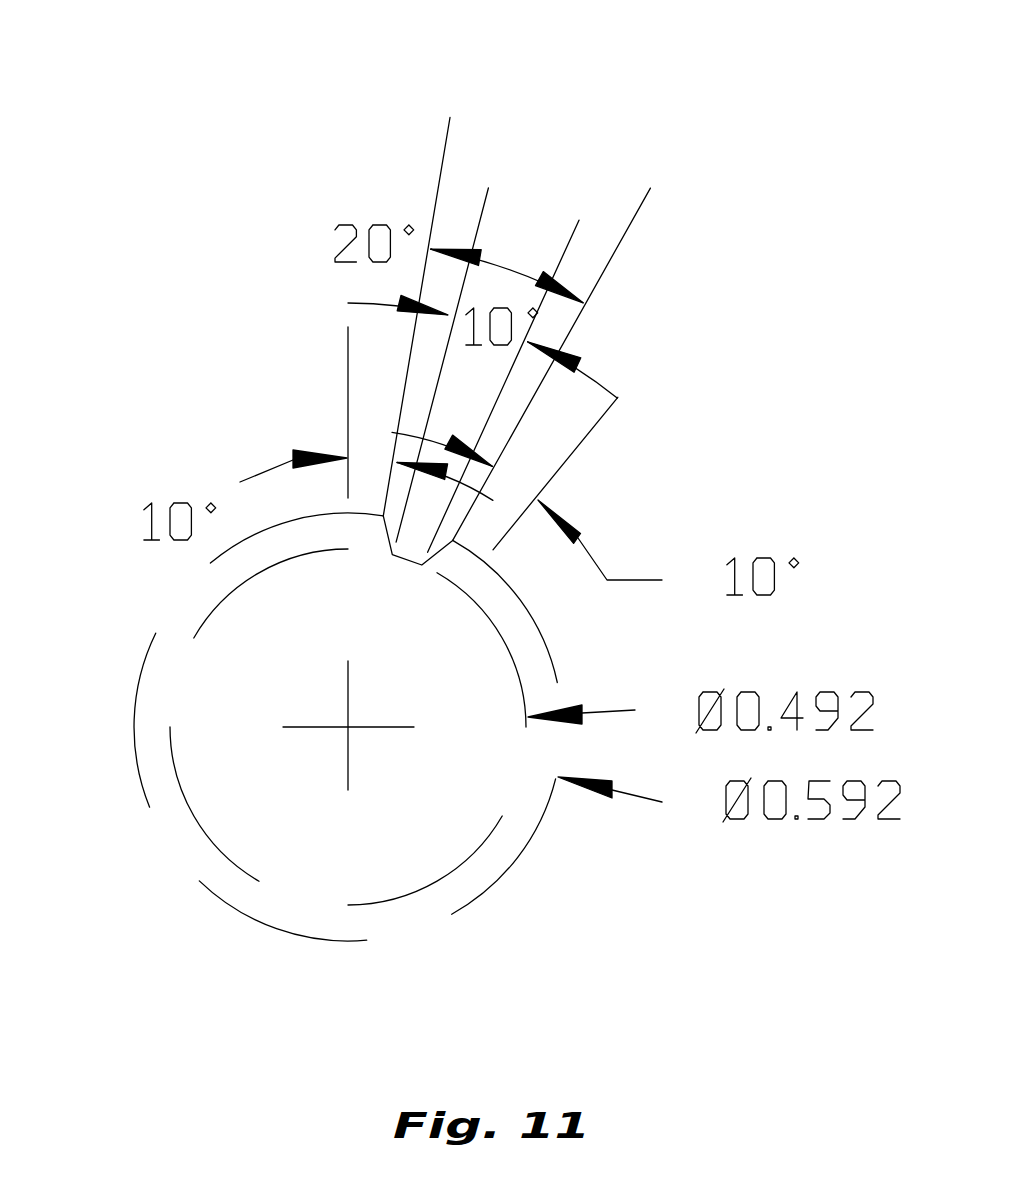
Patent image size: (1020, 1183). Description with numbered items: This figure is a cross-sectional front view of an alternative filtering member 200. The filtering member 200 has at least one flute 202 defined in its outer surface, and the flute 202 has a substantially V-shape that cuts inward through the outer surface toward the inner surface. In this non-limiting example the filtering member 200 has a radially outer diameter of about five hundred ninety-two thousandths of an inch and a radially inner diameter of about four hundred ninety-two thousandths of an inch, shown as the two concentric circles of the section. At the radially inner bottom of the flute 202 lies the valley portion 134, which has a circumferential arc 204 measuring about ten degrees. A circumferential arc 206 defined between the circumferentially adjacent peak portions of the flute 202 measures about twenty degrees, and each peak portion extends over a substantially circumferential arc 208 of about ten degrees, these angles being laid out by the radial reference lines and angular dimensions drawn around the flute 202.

The filtering member 200 is at (147, 112).
The valley portion 134 is at (416, 560).
The flute 202 is at (428, 578).
The circumferential arc 204 is at (593, 375).
The circumferential arc 206 is at (493, 265).
The circumferential arc 208 is at (262, 470).